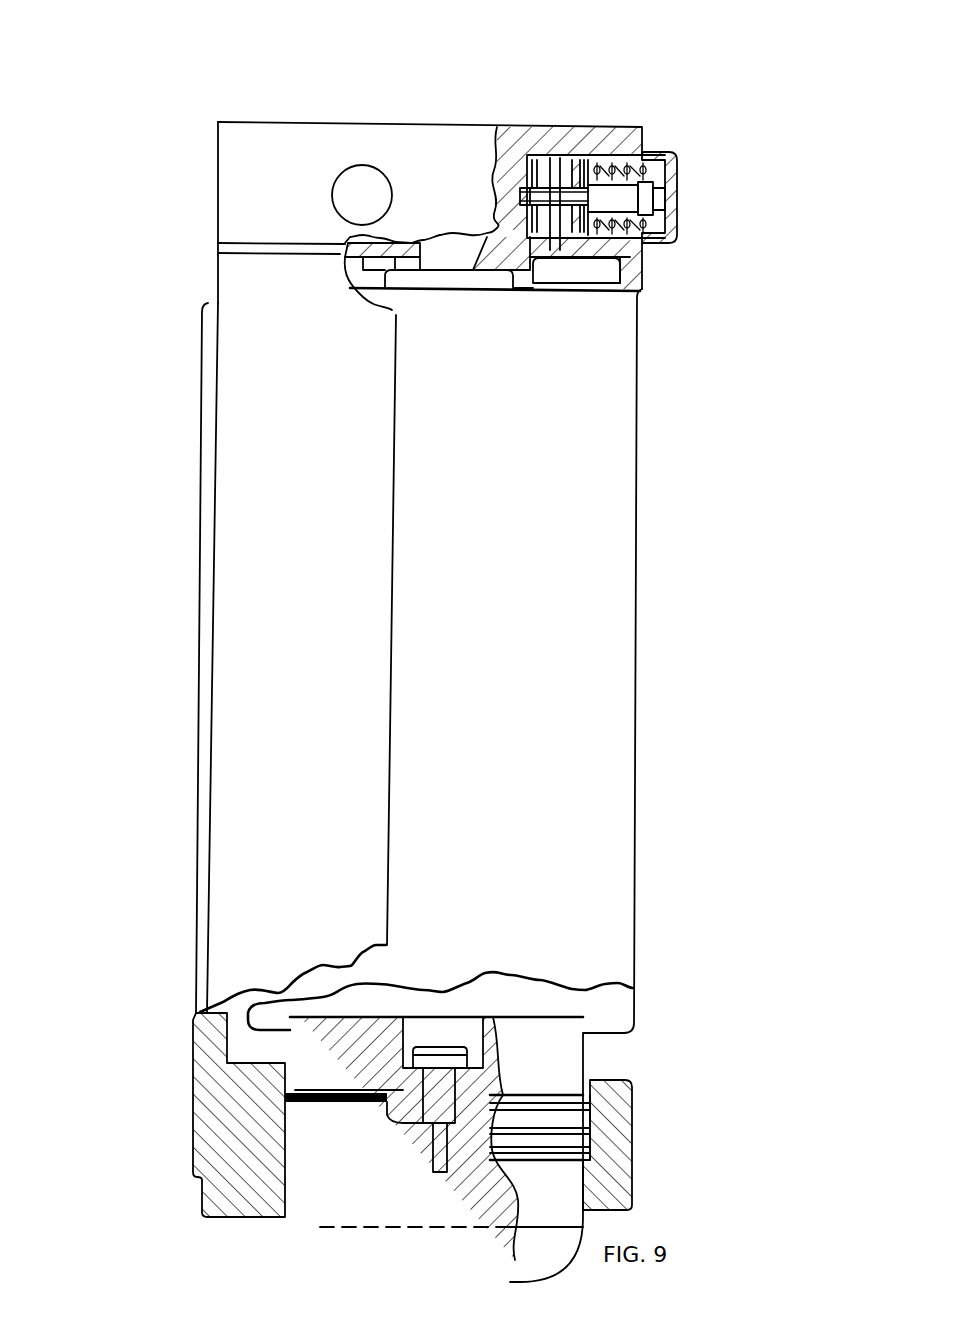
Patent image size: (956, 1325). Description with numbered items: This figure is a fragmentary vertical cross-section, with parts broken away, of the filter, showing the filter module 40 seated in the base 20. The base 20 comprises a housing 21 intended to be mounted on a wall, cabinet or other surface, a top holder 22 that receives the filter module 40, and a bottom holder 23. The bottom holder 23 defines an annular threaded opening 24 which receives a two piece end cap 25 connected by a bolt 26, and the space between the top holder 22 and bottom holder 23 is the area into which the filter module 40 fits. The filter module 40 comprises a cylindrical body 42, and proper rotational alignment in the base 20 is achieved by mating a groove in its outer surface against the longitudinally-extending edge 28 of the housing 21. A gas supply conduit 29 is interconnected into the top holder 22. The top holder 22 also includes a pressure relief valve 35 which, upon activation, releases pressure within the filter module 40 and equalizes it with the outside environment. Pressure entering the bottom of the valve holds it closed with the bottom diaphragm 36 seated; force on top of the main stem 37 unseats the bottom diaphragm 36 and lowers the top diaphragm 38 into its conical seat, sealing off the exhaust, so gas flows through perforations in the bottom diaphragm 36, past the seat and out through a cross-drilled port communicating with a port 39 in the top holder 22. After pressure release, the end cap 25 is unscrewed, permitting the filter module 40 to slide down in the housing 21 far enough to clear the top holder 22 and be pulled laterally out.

The base 20 is at (175, 523).
The housing 21 is at (228, 690).
The top holder 22 is at (300, 145).
The bottom holder 23 is at (200, 1132).
The annular threaded opening 24 is at (570, 1135).
The end cap 25 is at (552, 1050).
The bolt 26 is at (452, 1055).
The longitudinally-extending edge 28 is at (388, 358).
The gas supply conduit 29 is at (372, 178).
The pressure relief valve 35 is at (677, 195).
The bottom diaphragm 36 is at (545, 150).
The main stem 37 is at (668, 157).
The top diaphragm 38 is at (598, 165).
The port 39 is at (630, 255).
The filter module 40 is at (673, 693).
The cylindrical body 42 is at (622, 590).